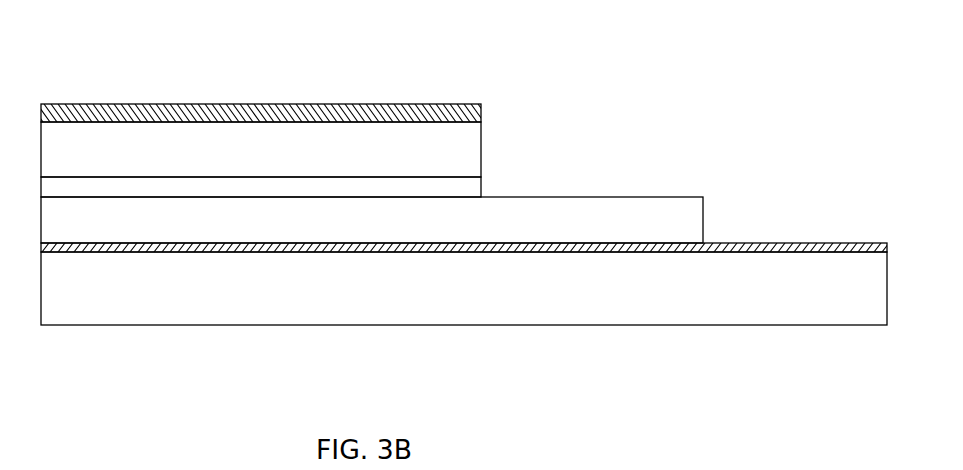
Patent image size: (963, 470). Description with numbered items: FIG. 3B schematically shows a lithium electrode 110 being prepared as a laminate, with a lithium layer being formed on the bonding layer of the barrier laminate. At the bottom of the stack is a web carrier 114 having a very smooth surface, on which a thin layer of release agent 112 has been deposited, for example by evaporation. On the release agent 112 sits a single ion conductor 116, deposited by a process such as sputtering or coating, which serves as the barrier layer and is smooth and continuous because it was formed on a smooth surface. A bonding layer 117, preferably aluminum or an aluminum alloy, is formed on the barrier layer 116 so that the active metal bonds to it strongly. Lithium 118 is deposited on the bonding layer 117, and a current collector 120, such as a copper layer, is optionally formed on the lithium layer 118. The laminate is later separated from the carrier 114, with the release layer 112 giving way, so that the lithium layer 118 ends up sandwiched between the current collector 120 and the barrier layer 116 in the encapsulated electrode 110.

The lithium electrode 110 is at (689, 92).
The release agent 112 is at (800, 245).
The web carrier 114 is at (683, 307).
The single ion conductor 116 is at (642, 221).
The bonding layer 117 is at (476, 189).
The lithium layer 118 is at (476, 142).
The current collector 120 is at (323, 111).